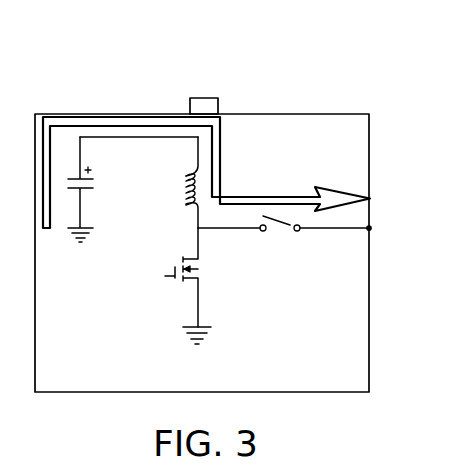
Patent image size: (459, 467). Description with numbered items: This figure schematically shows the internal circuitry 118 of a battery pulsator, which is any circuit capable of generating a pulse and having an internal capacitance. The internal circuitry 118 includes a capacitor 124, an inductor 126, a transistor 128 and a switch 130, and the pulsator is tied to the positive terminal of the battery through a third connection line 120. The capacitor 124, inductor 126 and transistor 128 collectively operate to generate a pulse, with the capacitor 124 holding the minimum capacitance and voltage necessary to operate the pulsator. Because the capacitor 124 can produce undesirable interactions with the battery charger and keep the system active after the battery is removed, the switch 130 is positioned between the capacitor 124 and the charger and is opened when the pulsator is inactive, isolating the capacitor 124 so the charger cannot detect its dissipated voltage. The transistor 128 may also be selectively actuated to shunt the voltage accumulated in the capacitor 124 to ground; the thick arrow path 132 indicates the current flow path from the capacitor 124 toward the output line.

The internal circuitry 118 is at (100, 95).
The third connection line 120 is at (342, 230).
The capacitor 124 is at (93, 187).
The inductor 126 is at (185, 178).
The transistor 128 is at (188, 282).
The switch 130 is at (263, 232).
The current path arrow 132 is at (219, 153).